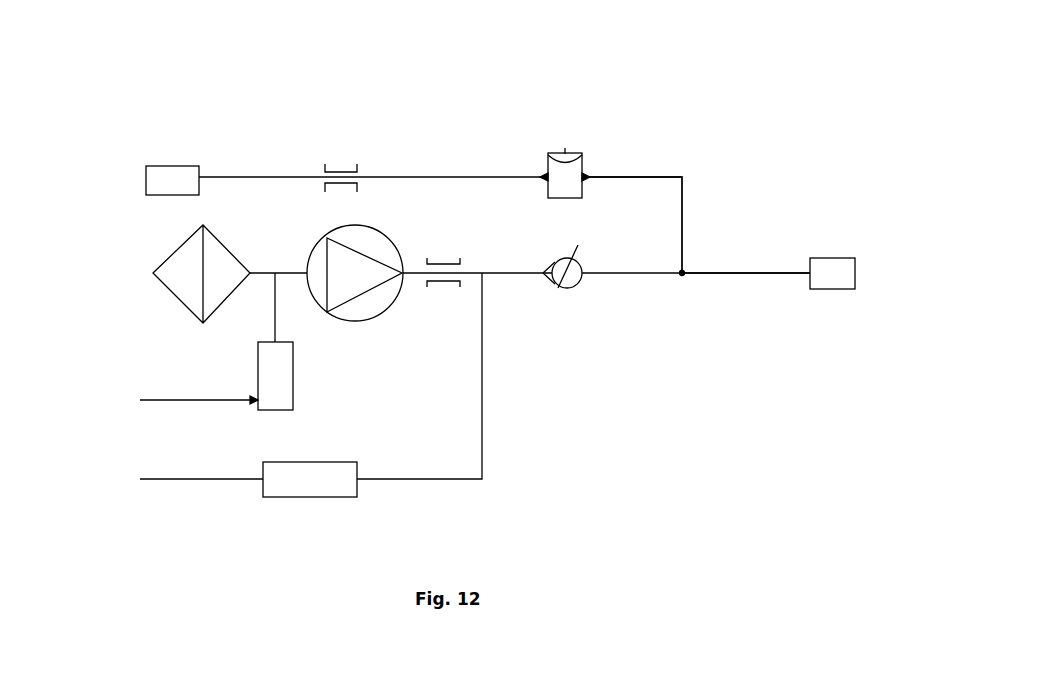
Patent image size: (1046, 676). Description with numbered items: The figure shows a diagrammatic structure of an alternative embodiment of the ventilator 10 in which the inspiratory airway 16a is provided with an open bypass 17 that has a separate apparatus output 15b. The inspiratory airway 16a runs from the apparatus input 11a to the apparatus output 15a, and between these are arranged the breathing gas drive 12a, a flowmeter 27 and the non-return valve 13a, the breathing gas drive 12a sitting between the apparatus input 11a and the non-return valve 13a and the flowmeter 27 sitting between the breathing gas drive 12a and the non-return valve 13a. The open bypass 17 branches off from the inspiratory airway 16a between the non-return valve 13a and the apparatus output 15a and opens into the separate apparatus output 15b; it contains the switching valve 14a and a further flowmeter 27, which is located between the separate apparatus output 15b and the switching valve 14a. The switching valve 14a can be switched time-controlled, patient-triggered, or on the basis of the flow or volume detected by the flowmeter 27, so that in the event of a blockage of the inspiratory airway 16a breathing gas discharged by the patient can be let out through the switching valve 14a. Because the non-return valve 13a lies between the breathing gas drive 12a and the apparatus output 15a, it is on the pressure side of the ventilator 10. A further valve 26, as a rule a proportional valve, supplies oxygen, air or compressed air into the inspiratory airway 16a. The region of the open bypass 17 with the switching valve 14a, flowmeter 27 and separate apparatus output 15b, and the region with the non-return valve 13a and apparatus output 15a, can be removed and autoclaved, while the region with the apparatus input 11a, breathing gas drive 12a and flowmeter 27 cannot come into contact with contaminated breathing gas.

The ventilator 10 is at (392, 97).
The apparatus input 11a is at (172, 329).
The breathing gas drive 12a is at (355, 322).
The non-return valve 13a is at (568, 293).
The switching valve 14a is at (585, 147).
The apparatus output 15a is at (825, 290).
The separate apparatus output 15b is at (170, 167).
The inspiratory airway 16a is at (720, 276).
The open bypass 17 is at (652, 175).
The further valve 26 is at (277, 410).
The flowmeter 27 is at (335, 158).